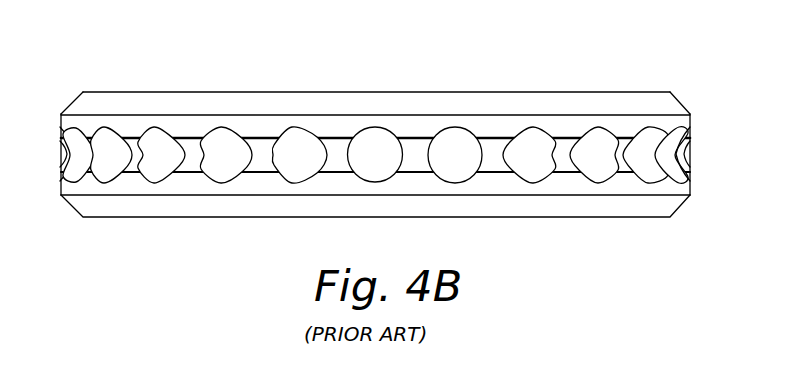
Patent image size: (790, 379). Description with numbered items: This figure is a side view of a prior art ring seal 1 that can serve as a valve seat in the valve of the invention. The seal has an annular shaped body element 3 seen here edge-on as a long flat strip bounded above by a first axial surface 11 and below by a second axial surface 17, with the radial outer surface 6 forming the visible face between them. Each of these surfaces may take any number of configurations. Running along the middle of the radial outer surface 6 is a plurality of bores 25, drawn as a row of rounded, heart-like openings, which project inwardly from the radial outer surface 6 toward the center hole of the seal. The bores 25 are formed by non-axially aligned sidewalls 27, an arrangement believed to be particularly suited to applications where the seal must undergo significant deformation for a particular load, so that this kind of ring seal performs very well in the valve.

The prior art laminated structure 1 is at (658, 21).
The annular shaped body element 3 is at (683, 98).
The radial outer surface 6 is at (695, 123).
The first axial surface 11 is at (192, 92).
The second axial surface 17 is at (197, 217).
The bores 25 is at (373, 147).
The non-axially aligned sidewalls 27 is at (416, 147).